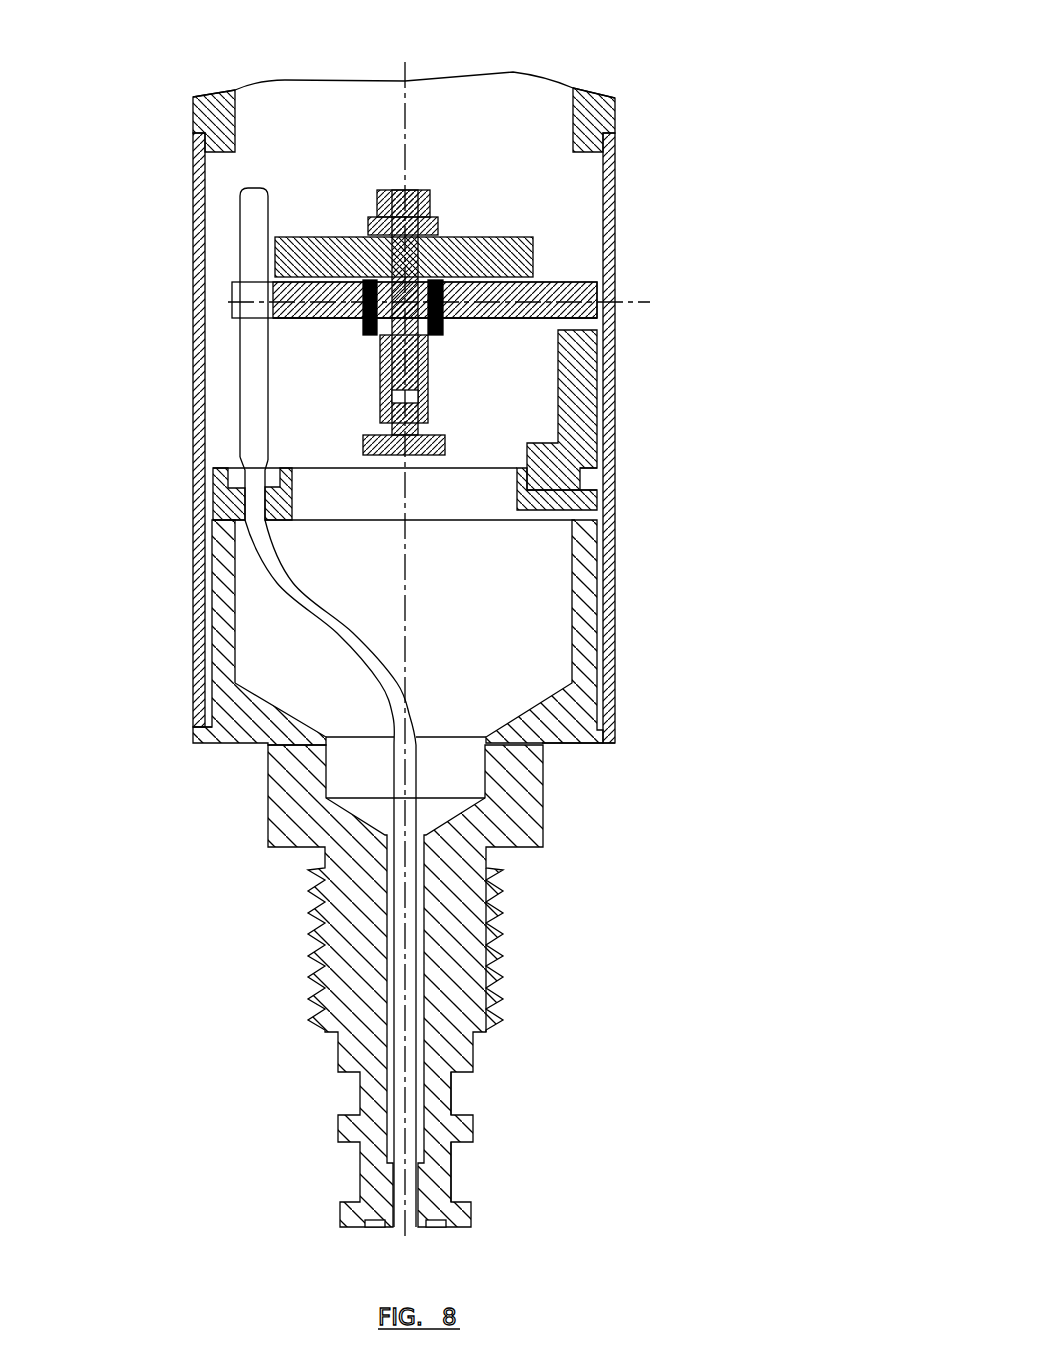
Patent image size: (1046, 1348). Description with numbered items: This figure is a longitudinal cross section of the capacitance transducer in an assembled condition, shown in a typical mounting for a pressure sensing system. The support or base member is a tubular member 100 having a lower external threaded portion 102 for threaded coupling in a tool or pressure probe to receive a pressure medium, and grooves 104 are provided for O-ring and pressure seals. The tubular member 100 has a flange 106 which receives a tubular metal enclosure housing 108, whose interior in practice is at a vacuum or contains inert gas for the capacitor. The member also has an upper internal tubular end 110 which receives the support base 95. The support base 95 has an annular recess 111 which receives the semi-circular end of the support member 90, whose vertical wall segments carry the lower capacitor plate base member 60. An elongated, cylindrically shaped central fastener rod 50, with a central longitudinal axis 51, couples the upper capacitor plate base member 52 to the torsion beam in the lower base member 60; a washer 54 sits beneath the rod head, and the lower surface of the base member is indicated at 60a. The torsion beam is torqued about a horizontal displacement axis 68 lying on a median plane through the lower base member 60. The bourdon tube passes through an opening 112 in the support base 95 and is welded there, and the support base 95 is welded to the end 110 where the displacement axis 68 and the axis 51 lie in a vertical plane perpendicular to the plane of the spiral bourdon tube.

The central longitudinal axis 51 is at (408, 64).
The central fastener rod 50 is at (430, 197).
The washer 54 is at (447, 213).
The upper capacitor plate base member 52 is at (533, 262).
The lower capacitor plate base member 60 is at (597, 283).
The displacement axis 68 is at (637, 302).
The diaphragm lower surface 60a is at (597, 315).
The support member 90 is at (590, 385).
The annular recess 111 is at (598, 456).
The support base 95 is at (597, 503).
The upper internal tubular end 110 is at (588, 580).
The tubular metal enclosure housing 108 is at (613, 652).
The flange 106 is at (617, 732).
The tubular member 100 is at (546, 798).
The lower external threaded portion 102 is at (503, 912).
The grooves 104 is at (453, 1093).
The opening 112 is at (243, 507).